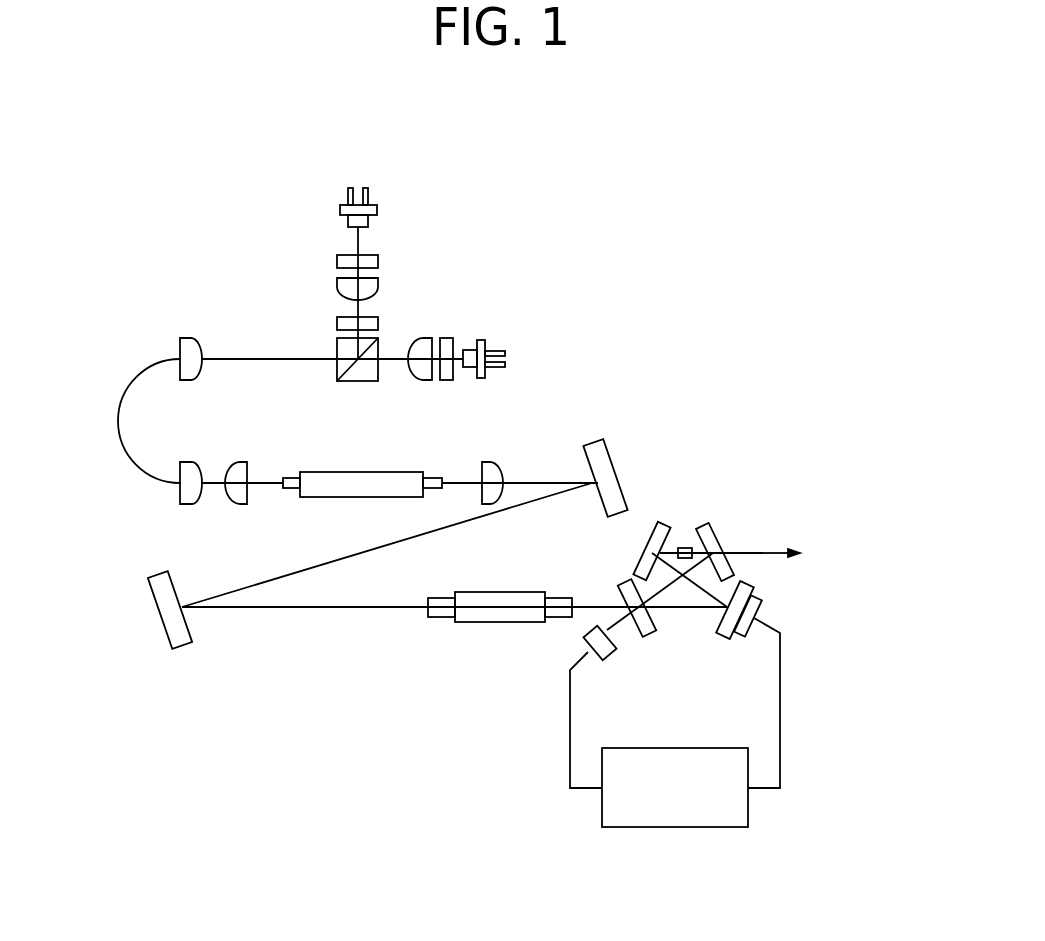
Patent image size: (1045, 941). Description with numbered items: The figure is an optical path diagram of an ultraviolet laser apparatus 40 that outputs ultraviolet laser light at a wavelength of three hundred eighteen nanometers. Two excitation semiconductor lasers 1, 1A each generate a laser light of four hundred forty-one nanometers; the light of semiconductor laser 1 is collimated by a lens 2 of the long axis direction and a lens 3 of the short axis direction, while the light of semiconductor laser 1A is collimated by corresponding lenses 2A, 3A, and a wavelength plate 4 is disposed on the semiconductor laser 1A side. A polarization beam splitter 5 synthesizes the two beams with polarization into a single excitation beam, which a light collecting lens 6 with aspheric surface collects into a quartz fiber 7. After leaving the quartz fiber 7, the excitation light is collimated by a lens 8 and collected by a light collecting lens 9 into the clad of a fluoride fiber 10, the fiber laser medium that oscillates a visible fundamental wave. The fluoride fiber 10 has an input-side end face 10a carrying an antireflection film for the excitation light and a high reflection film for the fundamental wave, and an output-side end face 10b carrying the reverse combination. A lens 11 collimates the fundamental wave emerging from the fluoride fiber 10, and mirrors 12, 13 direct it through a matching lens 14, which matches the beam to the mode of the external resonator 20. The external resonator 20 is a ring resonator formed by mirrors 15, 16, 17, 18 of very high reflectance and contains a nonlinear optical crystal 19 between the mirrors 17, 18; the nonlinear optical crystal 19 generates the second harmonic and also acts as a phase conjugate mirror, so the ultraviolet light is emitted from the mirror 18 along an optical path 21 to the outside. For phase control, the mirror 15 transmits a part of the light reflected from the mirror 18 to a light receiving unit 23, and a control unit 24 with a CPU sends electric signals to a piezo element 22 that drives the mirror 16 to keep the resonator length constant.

The semiconductor laser 1 is at (480, 338).
The lens 2 is at (447, 338).
The lens 3 is at (412, 340).
The semiconductor laser 1A is at (375, 210).
The lens 2A is at (378, 260).
The lens 3A is at (378, 285).
The wavelength plate 4 is at (337, 325).
The polarization beam splitter 5 is at (337, 348).
The light collecting lens 6 is at (200, 342).
The quartz fiber 7 is at (137, 377).
The lens 8 is at (202, 505).
The light collecting lens 9 is at (237, 505).
The fluoride fiber 10 is at (382, 472).
The input-side end face 10a is at (287, 478).
The output-side end face 10b is at (457, 455).
The lens 11 is at (492, 462).
The mirror 12 is at (592, 438).
The mirror 13 is at (177, 648).
The matching lens 14 is at (503, 622).
The mirror 15 is at (633, 642).
The mirror 16 is at (732, 637).
The mirror 17 is at (666, 522).
The mirror 18 is at (720, 527).
The nonlinear optical crystal 19 is at (682, 546).
The external resonator 20 is at (708, 501).
The optical path 21 is at (762, 553).
The piezo element 22 is at (760, 612).
The light receiving unit 23 is at (610, 657).
The control unit 24 is at (713, 827).
The ultraviolet laser apparatus 40 is at (681, 392).